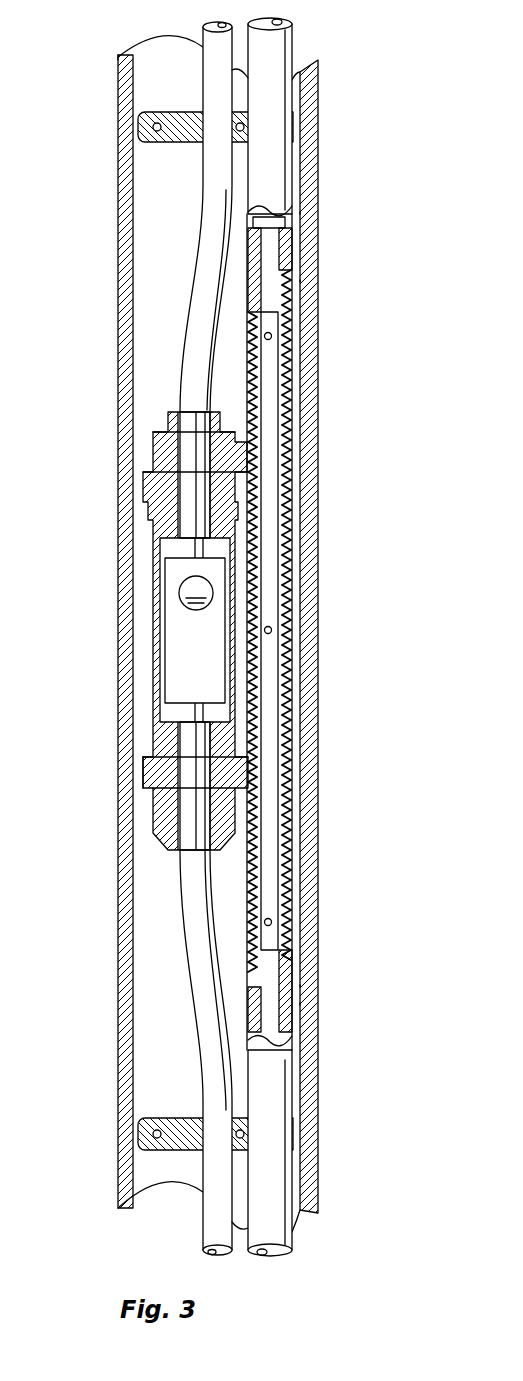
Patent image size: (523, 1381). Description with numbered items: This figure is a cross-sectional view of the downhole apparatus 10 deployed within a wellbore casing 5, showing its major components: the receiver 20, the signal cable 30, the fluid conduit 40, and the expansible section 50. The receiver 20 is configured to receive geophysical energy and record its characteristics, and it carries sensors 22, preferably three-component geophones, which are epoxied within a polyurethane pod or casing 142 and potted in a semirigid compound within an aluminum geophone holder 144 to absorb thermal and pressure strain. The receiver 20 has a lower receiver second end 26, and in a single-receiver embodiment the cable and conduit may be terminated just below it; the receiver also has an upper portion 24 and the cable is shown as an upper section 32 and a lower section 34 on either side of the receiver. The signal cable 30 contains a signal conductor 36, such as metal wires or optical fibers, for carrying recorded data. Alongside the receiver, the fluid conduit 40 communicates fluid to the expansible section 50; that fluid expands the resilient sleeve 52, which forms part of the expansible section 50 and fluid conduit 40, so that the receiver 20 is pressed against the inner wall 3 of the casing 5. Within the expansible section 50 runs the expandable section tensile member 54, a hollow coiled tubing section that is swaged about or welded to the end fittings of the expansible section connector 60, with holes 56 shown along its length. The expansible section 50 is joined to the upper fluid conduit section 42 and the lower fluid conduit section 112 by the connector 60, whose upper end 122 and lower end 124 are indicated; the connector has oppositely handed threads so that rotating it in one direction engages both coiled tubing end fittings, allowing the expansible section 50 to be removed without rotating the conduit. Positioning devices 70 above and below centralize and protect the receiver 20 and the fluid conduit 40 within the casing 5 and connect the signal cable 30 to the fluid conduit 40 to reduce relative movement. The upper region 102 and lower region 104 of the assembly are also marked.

The inner wall 3 is at (143, 236).
The casing 5 is at (318, 478).
The apparatus 10 is at (68, 567).
The receiver 20 is at (142, 632).
The sensors 22 is at (182, 592).
The upper fitting 24 is at (170, 412).
The receiver second end 26 is at (170, 850).
The signal cable 30 is at (151, 638).
The upper conduit section 32 is at (205, 238).
The lower conduit section 34 is at (197, 968).
The signal conductor 36 is at (196, 548).
The fluid conduit 40 is at (300, 42).
The fluid conduit section 42 is at (300, 179).
The expansible section 50 is at (296, 632).
The resilient sleeve 52 is at (292, 700).
The expandable section tensile member 54 is at (270, 432).
The pin hole 56 is at (272, 339).
The expansible section connector 60 is at (285, 248).
The positioning device 70 is at (180, 112).
The upper section 102 is at (333, 277).
The lower section 104 is at (337, 986).
The fluid conduit section 112 is at (292, 1092).
The upper end 122 is at (332, 213).
The lower end 124 is at (356, 1003).
The casing 142 is at (143, 660).
The geophone holder 144 is at (178, 676).